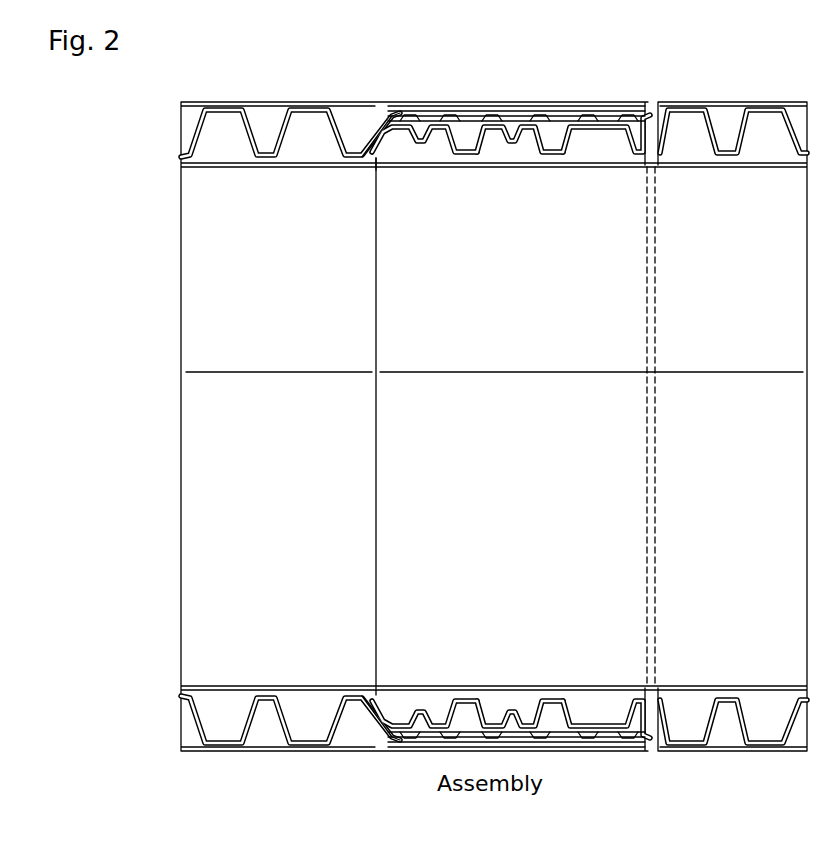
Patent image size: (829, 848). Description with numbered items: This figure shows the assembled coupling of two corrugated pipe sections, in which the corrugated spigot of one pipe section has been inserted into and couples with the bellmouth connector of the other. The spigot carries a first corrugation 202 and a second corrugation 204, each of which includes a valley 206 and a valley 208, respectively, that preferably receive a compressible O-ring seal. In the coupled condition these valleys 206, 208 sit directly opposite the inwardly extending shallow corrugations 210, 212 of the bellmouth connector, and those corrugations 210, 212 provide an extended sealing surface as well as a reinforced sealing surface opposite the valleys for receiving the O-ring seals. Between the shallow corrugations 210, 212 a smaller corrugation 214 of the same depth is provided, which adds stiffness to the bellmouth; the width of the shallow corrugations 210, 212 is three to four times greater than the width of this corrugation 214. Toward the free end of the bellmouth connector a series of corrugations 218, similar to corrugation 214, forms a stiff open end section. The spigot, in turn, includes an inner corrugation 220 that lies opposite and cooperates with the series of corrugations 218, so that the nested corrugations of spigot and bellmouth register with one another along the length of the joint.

The first corrugation 202 is at (430, 150).
The second corrugation 204 is at (520, 150).
The valley 206 is at (400, 155).
The valley 208 is at (532, 152).
The inwardly extending shallow corrugation 210 is at (428, 115).
The inwardly extending shallow corrugation 212 is at (522, 112).
The corrugation 214 is at (470, 112).
The series of corrugations 218 is at (603, 100).
The inner corrugation 220 is at (592, 150).